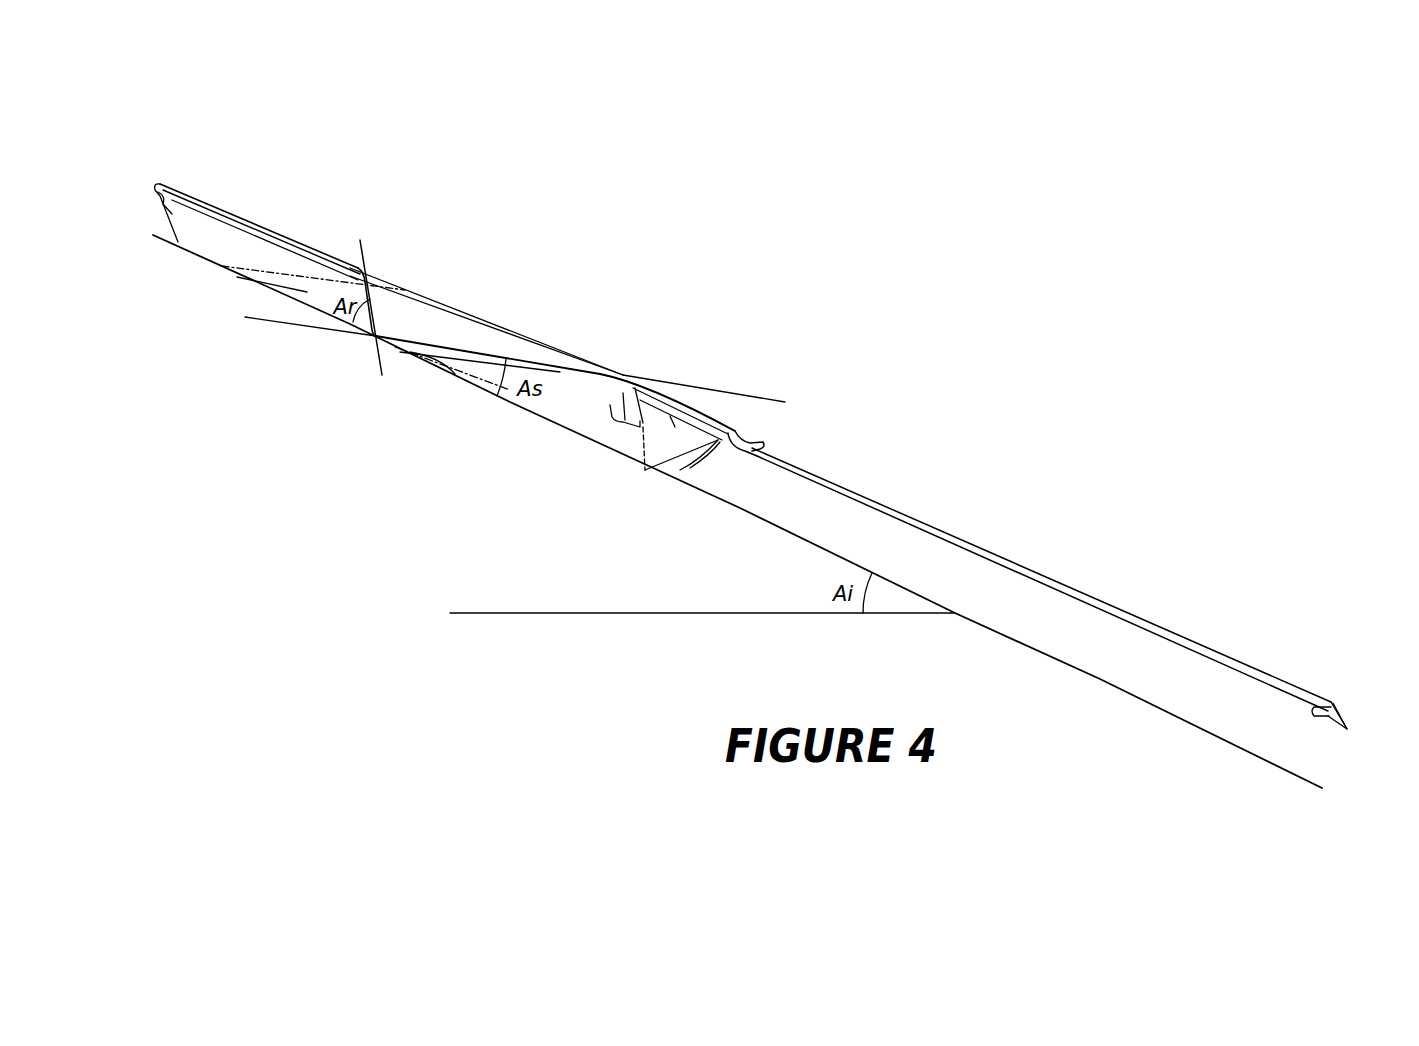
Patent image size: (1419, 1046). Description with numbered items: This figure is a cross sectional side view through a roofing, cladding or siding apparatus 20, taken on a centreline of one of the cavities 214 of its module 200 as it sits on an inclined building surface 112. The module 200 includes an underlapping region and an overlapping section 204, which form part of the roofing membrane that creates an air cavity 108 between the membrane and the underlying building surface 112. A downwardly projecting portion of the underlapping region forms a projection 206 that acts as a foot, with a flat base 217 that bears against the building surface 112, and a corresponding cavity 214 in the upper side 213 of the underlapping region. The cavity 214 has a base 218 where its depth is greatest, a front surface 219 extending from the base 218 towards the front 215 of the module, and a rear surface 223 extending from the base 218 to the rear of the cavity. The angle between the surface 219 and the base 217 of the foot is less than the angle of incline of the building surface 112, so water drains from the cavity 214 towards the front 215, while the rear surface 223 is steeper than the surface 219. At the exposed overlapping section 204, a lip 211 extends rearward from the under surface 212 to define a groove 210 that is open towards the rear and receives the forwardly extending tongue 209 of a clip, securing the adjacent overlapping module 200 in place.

The roofing, cladding or siding apparatus 20 is at (758, 308).
The cavity 108 is at (622, 437).
The building surface 112 is at (1200, 730).
The roofing, cladding or siding module 200 is at (162, 182).
The overlapping section 204 is at (1072, 588).
The projection 206 is at (220, 243).
The tongue 209 is at (763, 442).
The groove 210 is at (1322, 703).
The lip 211 is at (1320, 717).
The under surface 212 is at (1190, 647).
The upper side 213 is at (292, 238).
The cavity 214 is at (487, 337).
The front edge 215 is at (1345, 720).
The base of the foot 217 is at (197, 257).
The base of the cavity 218 is at (380, 334).
The surface of the cavity 219 is at (568, 364).
The rear surface of the cavity 223 is at (372, 293).